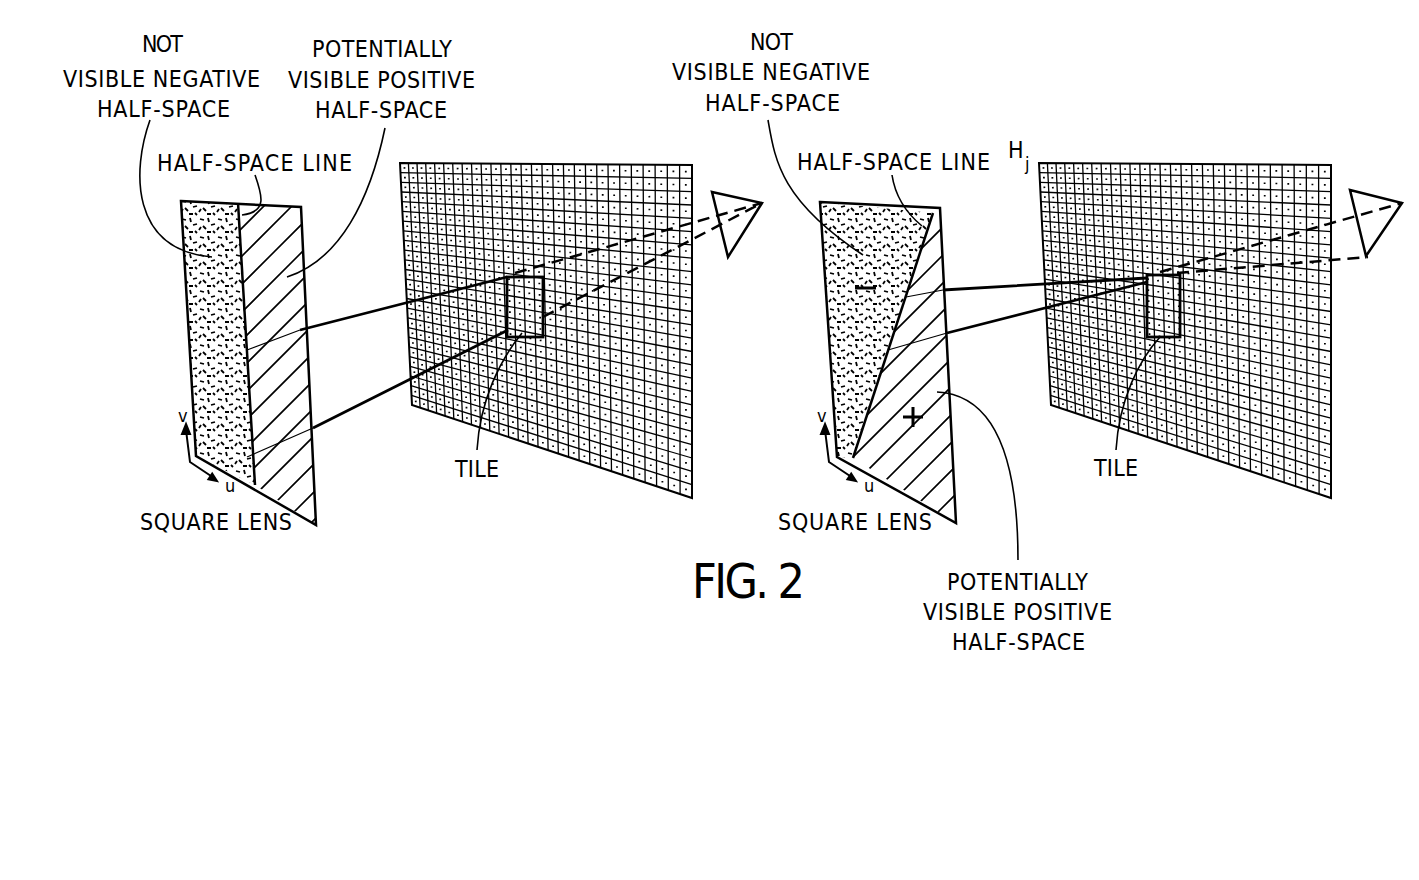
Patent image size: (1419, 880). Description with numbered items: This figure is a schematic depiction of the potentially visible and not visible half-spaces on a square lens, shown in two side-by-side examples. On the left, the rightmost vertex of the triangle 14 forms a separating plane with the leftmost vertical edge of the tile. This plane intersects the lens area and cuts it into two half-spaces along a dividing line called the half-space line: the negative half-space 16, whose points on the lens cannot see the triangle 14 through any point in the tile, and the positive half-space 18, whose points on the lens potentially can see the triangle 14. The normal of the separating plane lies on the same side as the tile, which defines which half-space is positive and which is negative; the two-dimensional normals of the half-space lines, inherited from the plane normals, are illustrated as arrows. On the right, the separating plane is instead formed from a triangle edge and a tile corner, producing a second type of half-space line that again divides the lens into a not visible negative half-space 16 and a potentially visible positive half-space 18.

The triangle 14 is at (737, 228).
The negative half-space 16 is at (200, 315).
The positive half-space 18 is at (300, 473).